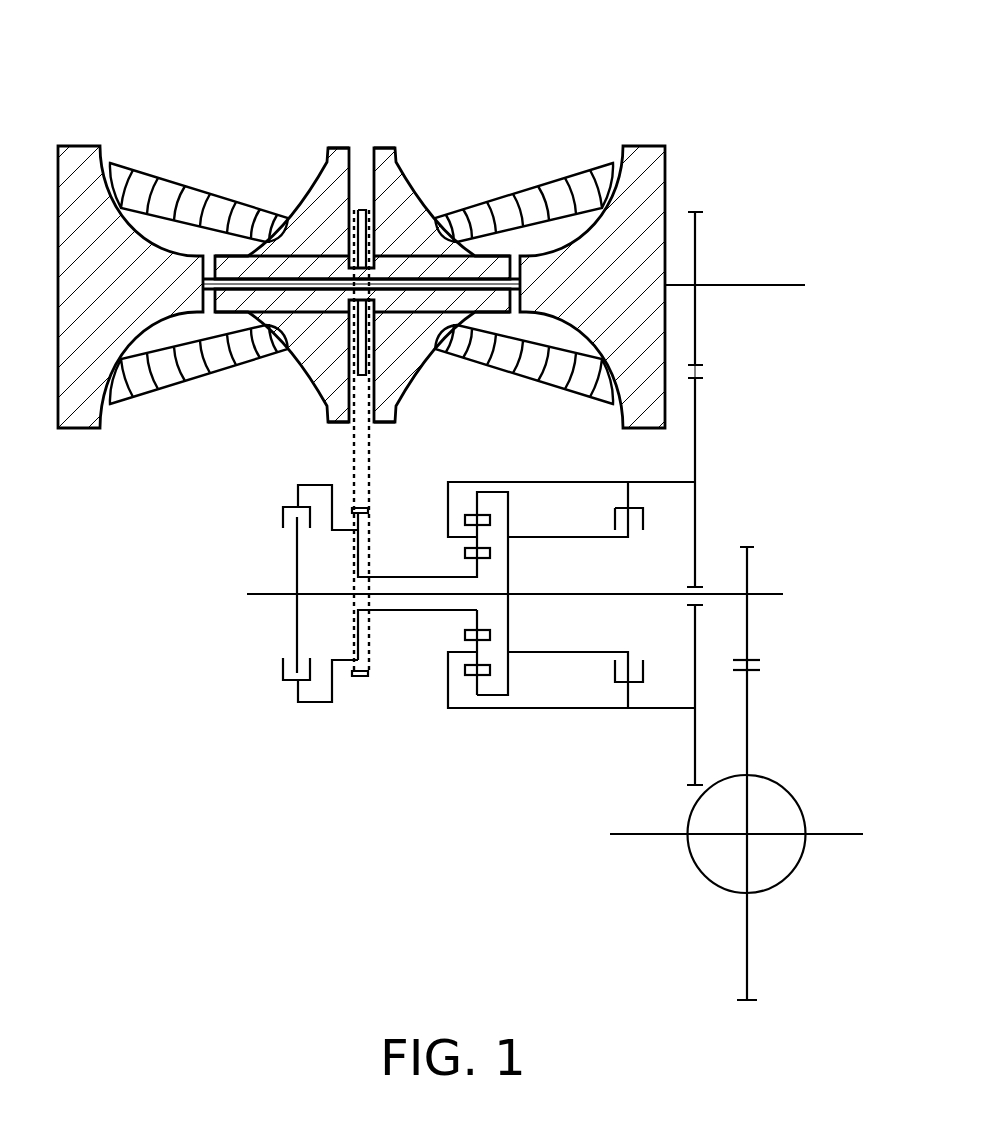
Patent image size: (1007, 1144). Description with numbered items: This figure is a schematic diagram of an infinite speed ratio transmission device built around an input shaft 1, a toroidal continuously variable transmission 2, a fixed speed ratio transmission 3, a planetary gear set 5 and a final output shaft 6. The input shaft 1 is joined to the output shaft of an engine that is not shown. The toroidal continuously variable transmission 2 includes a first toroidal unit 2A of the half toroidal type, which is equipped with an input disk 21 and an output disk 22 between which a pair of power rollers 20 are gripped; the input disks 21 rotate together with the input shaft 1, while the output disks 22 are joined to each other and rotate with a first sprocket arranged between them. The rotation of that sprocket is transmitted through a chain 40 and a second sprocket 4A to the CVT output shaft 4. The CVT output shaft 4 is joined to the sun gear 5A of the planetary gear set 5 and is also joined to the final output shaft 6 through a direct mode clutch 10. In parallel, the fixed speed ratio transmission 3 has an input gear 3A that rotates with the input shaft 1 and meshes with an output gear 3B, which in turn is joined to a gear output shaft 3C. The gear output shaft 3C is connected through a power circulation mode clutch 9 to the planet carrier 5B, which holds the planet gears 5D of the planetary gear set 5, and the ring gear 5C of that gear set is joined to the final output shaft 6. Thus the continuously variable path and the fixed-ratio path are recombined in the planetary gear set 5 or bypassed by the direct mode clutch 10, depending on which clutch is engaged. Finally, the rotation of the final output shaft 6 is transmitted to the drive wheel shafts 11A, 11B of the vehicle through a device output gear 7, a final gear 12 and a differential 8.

The input shaft 1 is at (753, 285).
The toroidal continuously variable transmission 2 is at (445, 108).
The first toroidal unit 2A is at (366, 208).
The power roller 20 is at (145, 148).
The input disk 21 is at (80, 146).
The output disk 22 is at (330, 178).
The chain 40 is at (372, 446).
The fixed speed ratio transmission 3 is at (793, 338).
The input gear 3A is at (700, 355).
The output gear 3B is at (700, 430).
The gear output shaft 3C is at (650, 710).
The CVT output shaft 4 is at (424, 576).
The second sprocket 4A is at (362, 518).
The planetary gear set 5 is at (481, 736).
The sun gear 5A is at (467, 630).
The planet carrier 5B is at (448, 663).
The ring gear 5C is at (470, 673).
The planet gear 5D is at (480, 658).
The final output shaft 6 is at (713, 595).
The device output gear 7 is at (748, 642).
The differential 8 is at (788, 787).
The power circulation mode clutch 9 is at (620, 683).
The direct mode clutch 10 is at (283, 668).
The drive wheel shaft 11A is at (816, 838).
The drive wheel shaft 11B is at (632, 837).
The final gear 12 is at (748, 685).